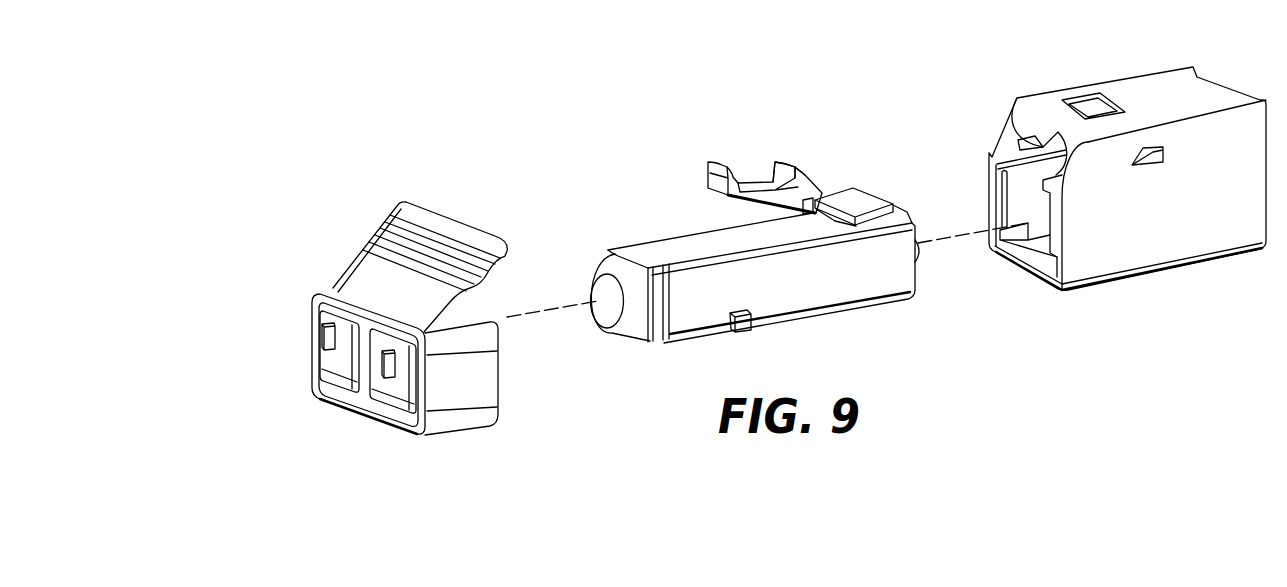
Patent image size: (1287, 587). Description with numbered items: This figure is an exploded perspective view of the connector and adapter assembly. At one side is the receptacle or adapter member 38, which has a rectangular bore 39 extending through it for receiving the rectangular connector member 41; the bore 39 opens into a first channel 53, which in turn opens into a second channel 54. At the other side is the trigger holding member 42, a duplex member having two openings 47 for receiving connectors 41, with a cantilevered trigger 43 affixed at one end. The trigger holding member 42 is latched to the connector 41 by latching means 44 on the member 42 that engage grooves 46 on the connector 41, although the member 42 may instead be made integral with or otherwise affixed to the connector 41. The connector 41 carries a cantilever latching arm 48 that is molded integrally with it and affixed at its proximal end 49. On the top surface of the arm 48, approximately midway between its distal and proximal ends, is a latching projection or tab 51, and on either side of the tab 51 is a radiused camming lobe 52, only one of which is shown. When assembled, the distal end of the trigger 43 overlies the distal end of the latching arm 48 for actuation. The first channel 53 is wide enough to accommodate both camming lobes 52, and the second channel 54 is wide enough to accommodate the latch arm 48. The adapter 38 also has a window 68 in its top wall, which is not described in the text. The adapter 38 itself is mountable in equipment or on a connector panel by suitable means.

The adapter member 38 is at (1173, 243).
The bore 39 is at (1037, 251).
The connector member 41 is at (625, 323).
The trigger holding member 42 is at (458, 403).
The cantilevered trigger 43 is at (384, 222).
The latching means 44 is at (322, 336).
The grooves 46 is at (663, 334).
The openings 47 is at (347, 380).
The cantilever latching arm 48 is at (707, 179).
The proximal end 49 is at (860, 198).
The latching projection or tab 51 is at (788, 163).
The radiused camming lobe 52 is at (817, 210).
The first channel 53 is at (1023, 148).
The second channel 54 is at (1047, 128).
The window 68 is at (1102, 108).